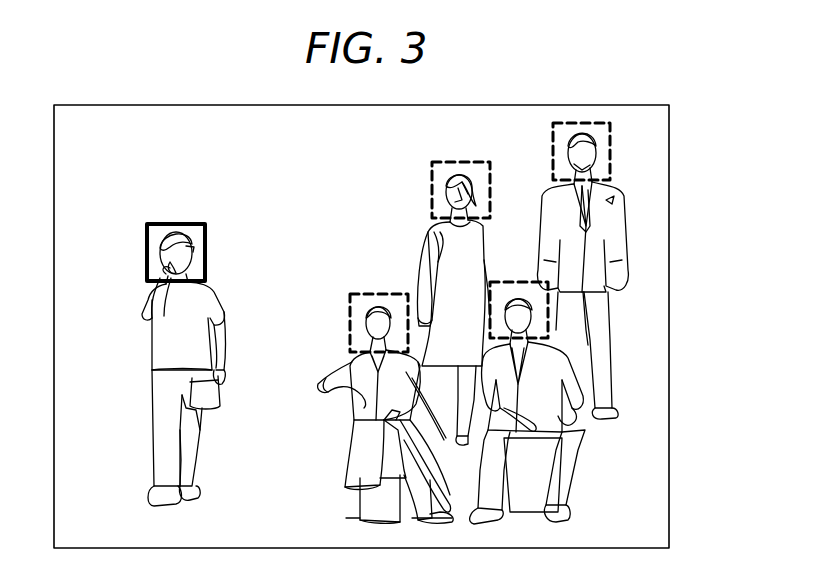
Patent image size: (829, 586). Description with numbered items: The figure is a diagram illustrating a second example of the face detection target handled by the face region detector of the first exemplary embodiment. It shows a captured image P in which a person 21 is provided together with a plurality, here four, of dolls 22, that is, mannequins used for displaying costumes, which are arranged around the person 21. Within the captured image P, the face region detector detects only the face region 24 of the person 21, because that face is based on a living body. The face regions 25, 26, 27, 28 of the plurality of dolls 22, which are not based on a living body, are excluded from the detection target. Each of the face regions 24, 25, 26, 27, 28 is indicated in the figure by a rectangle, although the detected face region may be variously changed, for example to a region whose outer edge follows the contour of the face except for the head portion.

The captured image P is at (669, 391).
The person 21 is at (230, 299).
The dolls 22 is at (370, 222).
The face region 24 is at (200, 218).
The face region 25 is at (372, 290).
The face region 26 is at (450, 160).
The face region 27 is at (613, 160).
The face region 28 is at (504, 278).